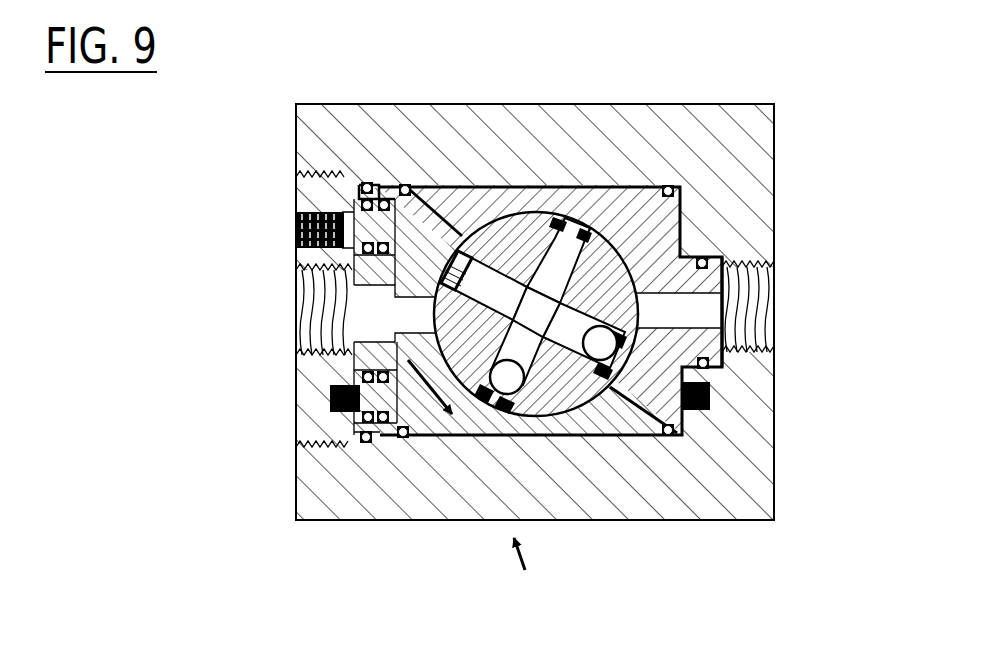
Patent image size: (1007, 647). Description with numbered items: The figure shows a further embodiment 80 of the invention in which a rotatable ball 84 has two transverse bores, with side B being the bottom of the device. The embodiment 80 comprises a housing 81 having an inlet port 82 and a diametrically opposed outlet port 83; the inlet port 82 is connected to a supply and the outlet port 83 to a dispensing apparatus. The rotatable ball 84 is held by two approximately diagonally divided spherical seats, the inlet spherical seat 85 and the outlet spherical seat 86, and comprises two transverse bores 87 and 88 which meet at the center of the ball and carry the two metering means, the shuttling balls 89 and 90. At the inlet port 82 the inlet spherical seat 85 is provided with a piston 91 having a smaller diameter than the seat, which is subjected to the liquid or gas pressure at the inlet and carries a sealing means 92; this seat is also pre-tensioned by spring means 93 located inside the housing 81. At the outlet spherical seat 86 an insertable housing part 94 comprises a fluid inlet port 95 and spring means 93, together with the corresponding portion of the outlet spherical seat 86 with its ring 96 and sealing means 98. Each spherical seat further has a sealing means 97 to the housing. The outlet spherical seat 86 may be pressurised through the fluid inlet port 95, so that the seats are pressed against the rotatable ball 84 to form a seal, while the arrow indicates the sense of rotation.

The embodiment 80 is at (792, 348).
The housing 81 is at (706, 472).
The inlet port 82 is at (757, 283).
The outlet port 83 is at (297, 290).
The rotatable ball 84 is at (512, 238).
The inlet spherical seat 85 is at (643, 217).
The outlet spherical seat 86 is at (430, 415).
The transverse bore 87 is at (570, 342).
The transverse bore 88 is at (557, 240).
The shuttling ball 89 is at (602, 346).
The shuttling ball 90 is at (466, 238).
The piston 91 is at (705, 340).
The sealing means 92 is at (724, 252).
The spring means 93 is at (330, 397).
The insertable housing part 94 is at (318, 422).
The fluid inlet port 95 is at (297, 222).
The ring 96 is at (380, 218).
The sealing means 97 is at (668, 185).
The sealing means 98 is at (382, 440).
The side B is at (479, 491).